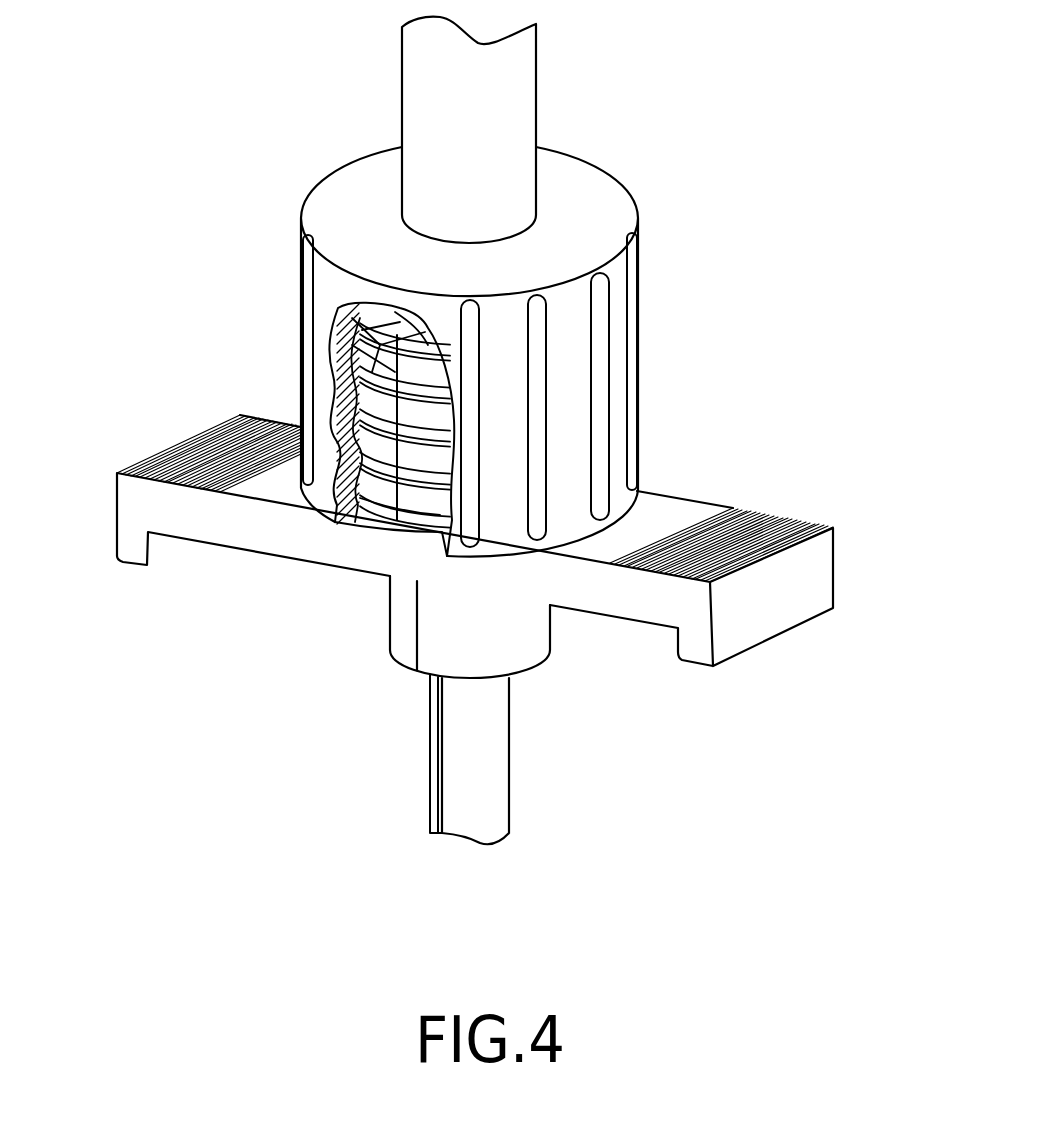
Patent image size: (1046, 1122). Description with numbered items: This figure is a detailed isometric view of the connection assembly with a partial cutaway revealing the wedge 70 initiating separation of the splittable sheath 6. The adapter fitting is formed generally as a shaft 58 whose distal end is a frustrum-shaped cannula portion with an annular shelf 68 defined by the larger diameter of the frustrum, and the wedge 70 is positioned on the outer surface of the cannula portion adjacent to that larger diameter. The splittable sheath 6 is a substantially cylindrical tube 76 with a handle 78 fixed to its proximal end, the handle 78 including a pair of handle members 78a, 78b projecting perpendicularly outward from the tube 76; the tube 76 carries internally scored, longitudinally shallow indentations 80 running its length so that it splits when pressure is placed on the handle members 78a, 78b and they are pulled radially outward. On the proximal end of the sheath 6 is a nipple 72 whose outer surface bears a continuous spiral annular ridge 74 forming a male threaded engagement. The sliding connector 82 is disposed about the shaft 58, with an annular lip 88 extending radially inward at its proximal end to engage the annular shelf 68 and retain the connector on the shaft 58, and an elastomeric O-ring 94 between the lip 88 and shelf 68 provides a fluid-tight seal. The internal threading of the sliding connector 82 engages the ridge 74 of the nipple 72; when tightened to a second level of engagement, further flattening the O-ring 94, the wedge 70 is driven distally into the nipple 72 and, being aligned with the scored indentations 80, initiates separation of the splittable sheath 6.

The shaft 58 is at (527, 73).
The annular lip 88 is at (605, 202).
The sliding connector 82 is at (617, 325).
The annular shelf 68 is at (423, 330).
The elastomeric O-ring 94 is at (375, 318).
The wedge 70 is at (362, 368).
The nipple 72 is at (435, 466).
The annular ridge 74 is at (413, 503).
The handle 78 is at (308, 543).
The handle member 78a is at (117, 490).
The handle member 78b is at (806, 586).
The splittable sheath 6 is at (537, 670).
The tube 76 is at (497, 798).
The indentations 80 is at (438, 788).